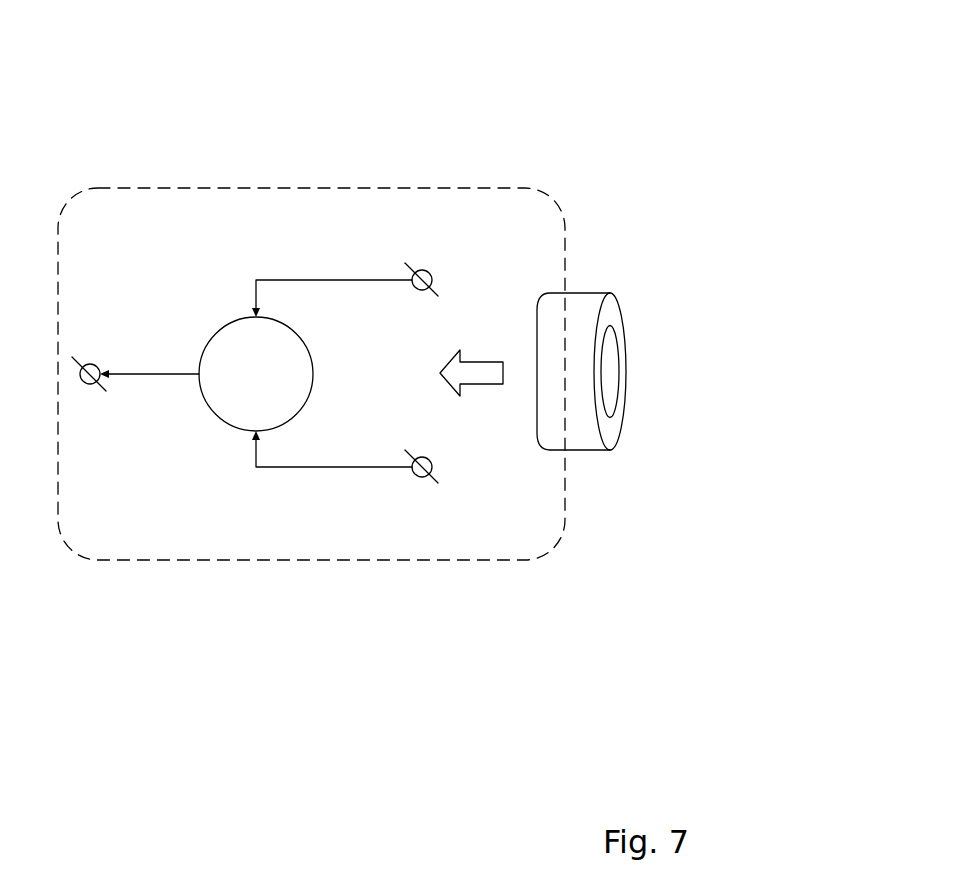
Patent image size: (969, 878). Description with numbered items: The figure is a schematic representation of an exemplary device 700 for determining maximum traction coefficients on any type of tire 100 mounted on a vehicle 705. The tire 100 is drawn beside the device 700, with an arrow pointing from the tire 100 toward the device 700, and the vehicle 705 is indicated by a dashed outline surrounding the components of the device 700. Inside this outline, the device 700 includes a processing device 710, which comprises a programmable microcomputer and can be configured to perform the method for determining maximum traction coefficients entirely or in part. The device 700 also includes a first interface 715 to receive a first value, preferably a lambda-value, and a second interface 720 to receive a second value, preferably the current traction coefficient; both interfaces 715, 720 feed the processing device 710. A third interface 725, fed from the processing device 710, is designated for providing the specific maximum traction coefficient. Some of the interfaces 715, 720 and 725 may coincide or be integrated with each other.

The device 700 is at (113, 158).
The vehicle 705 is at (333, 188).
The processing device 710 is at (256, 374).
The first interface 715 is at (427, 270).
The second interface 720 is at (427, 478).
The third interface 725 is at (90, 384).
The tire 100 is at (577, 293).